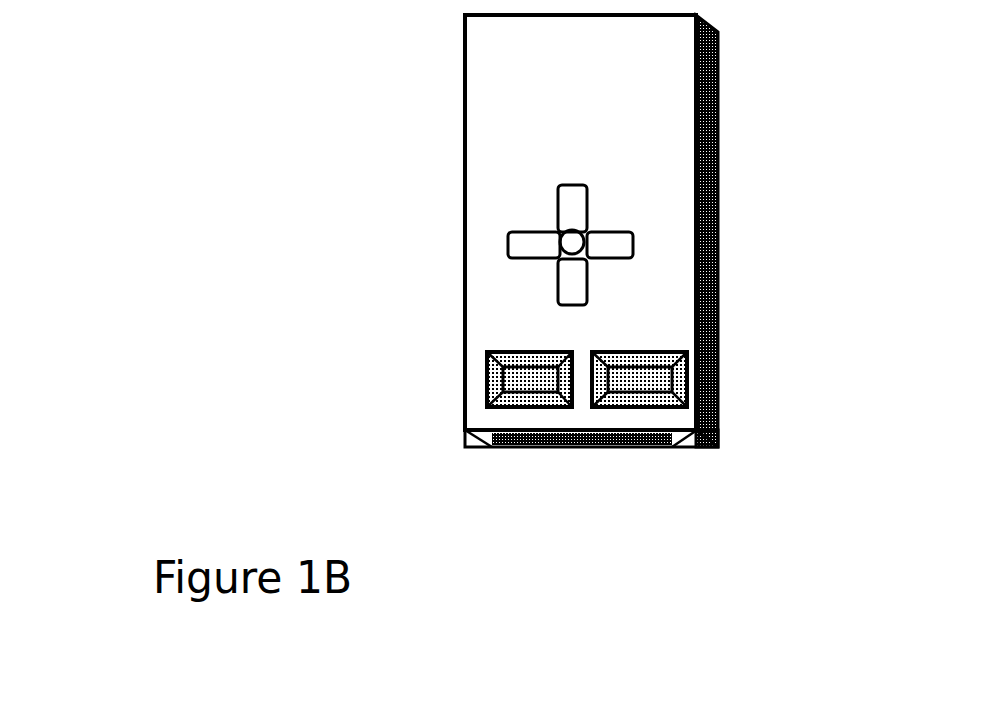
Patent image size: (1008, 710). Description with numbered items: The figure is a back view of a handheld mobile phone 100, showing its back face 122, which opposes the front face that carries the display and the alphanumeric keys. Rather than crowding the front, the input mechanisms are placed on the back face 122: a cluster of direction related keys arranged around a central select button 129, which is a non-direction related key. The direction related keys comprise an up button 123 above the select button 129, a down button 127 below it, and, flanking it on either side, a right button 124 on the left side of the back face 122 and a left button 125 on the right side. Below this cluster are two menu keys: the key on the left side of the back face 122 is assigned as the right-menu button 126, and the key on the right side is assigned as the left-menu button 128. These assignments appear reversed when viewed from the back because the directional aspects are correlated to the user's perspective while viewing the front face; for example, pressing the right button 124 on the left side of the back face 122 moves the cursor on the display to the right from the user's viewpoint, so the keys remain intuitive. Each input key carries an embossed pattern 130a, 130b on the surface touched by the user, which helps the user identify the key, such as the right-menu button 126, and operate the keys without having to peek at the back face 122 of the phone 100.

The mobile phone 100 is at (82, 236).
The back face 122 is at (580, 222).
The up button 123 is at (555, 187).
The right button 124 is at (529, 261).
The left button 125 is at (638, 246).
The right-menu button 126 is at (447, 443).
The down button 127 is at (576, 308).
The left-menu button 128 is at (724, 444).
The select button 129 is at (583, 236).
The embossed pattern 130a is at (523, 388).
The embossed pattern 130b is at (636, 395).